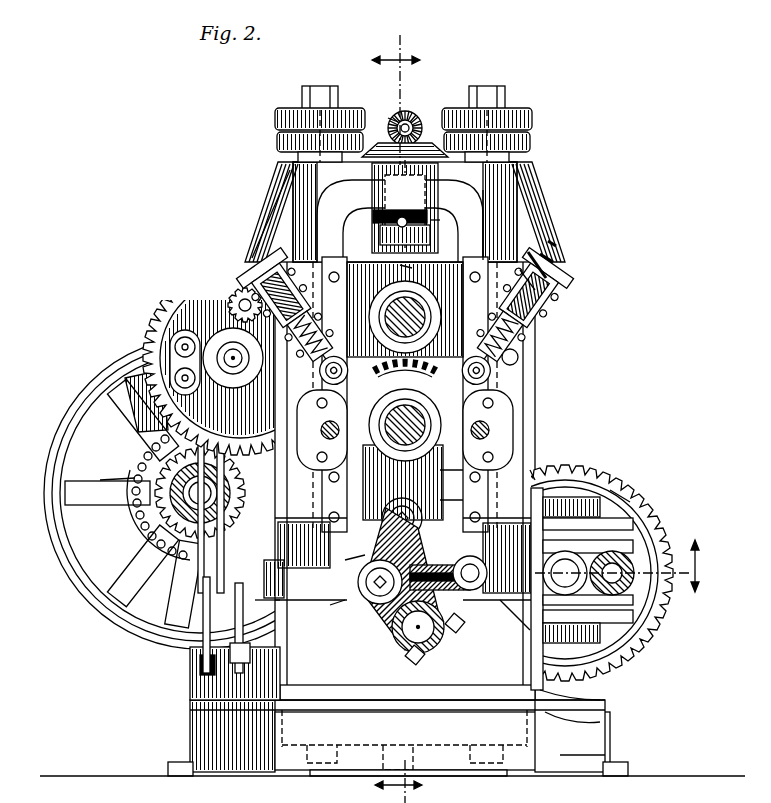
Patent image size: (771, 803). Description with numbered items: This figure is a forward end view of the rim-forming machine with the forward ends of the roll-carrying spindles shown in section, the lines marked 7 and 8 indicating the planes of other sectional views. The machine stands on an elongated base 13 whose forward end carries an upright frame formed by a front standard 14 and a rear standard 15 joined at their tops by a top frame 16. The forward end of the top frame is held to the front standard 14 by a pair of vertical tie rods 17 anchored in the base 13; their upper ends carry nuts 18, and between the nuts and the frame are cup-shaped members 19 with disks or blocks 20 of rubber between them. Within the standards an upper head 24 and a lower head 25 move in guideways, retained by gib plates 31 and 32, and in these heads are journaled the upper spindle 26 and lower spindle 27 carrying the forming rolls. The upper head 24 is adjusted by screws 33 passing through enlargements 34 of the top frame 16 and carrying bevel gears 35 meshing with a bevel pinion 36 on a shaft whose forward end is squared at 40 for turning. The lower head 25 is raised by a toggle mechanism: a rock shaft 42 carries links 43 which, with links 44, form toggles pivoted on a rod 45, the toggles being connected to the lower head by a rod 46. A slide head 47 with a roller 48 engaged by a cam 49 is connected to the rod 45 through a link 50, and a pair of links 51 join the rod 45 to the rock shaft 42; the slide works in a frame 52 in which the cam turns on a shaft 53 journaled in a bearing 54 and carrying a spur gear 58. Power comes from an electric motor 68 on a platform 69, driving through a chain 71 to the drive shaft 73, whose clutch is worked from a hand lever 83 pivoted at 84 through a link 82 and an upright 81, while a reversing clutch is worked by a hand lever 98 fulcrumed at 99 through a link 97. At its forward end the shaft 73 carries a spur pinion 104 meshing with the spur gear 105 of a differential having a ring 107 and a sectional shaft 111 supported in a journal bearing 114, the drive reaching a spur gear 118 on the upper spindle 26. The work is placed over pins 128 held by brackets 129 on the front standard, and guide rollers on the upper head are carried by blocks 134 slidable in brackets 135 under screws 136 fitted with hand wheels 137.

The section line 7- 7 is at (395, 418).
The section line 8- 8 is at (703, 566).
The base 13 is at (275, 728).
The front standard 14 is at (520, 410).
The rear standard 15 is at (212, 575).
The top frame 16 is at (300, 190).
The vertical tie rods 17 is at (495, 190).
The nuts 18 is at (304, 96).
The cup-shaped members 19 is at (276, 120).
The rubber disks 20 is at (280, 142).
The upper head 24 is at (447, 258).
The lower head 25 is at (532, 475).
The upper spindle 26 is at (393, 305).
The lower spindle 27 is at (400, 440).
The gib plate 31 is at (510, 260).
The gib plate 32 is at (440, 490).
The screws 33 is at (383, 205).
The enlargements 34 is at (414, 263).
The bevel gears 35 is at (424, 146).
The bevel pinion 36 is at (410, 112).
The squared end 40 is at (396, 118).
The rock shaft 42 is at (416, 630).
The toggle links 43 is at (406, 606).
The toggle links 44 is at (420, 218).
The rod 45 is at (330, 605).
The rod 46 is at (345, 560).
The slide head 47 is at (598, 498).
The roller 48 is at (637, 588).
The cam 49 is at (650, 518).
The link 50 is at (470, 590).
The links 51 is at (408, 608).
The frame 52 is at (565, 538).
The cam shaft 53 is at (612, 620).
The bearing 54 is at (530, 628).
The spur gear 58 is at (585, 692).
The electric motor 68 is at (600, 722).
The platform 69 is at (607, 757).
The chain 71 is at (142, 525).
The drive shaft 73 is at (198, 492).
The upright 81 is at (215, 688).
The link 82 is at (200, 668).
The hand lever 83 is at (157, 410).
The pivot 84 is at (203, 582).
The link 97 is at (245, 652).
The hand lever 98 is at (320, 455).
The fulcrum 99 is at (262, 600).
The spur pinion 104 is at (150, 527).
The spur gear 105 is at (216, 268).
The ring 107 is at (232, 305).
The sectional shaft 111 is at (222, 353).
The journal bearing 114 is at (213, 367).
The spur gear 118 is at (518, 357).
The pins 128 is at (489, 430).
The brackets 129 is at (505, 395).
The blocks 134 is at (500, 322).
The brackets 135 is at (560, 290).
The screws 136 is at (556, 273).
The hand wheels 137 is at (513, 252).